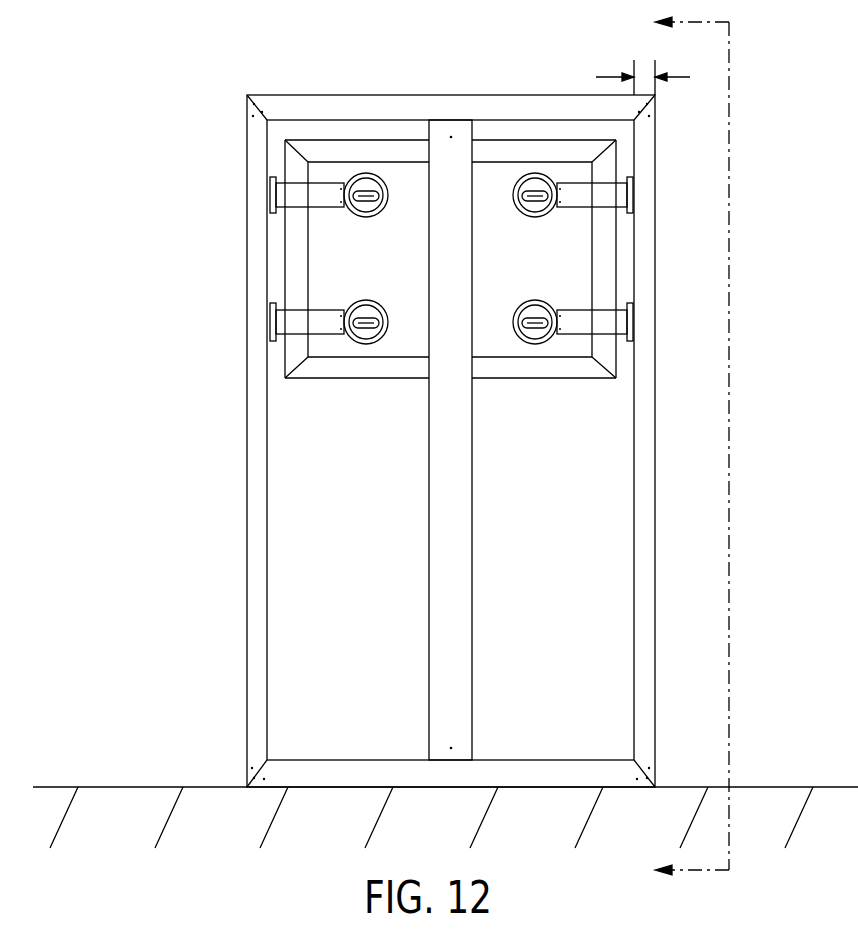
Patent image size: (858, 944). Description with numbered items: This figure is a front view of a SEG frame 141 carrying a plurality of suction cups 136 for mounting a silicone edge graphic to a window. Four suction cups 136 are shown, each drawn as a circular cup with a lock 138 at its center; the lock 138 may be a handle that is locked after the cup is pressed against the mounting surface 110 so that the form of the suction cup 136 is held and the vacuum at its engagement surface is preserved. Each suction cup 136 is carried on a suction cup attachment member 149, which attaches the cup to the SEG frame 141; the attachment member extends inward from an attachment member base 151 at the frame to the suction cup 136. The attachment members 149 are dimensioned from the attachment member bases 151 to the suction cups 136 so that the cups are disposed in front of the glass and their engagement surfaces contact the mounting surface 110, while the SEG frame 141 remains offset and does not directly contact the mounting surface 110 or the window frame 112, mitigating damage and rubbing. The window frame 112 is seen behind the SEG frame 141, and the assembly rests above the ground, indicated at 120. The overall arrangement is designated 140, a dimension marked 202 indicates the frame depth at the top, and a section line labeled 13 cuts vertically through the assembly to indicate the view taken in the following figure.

The section line 13- 13 is at (676, 450).
The mounting surface 110 is at (498, 177).
The window frame 112 is at (388, 152).
The ground surface 120 is at (796, 787).
The suction cup 136 is at (355, 178).
The lock 138 is at (380, 215).
The barrier assembly 140 is at (838, 69).
The SEG frame 141 is at (495, 110).
The suction cup attachment member 149 is at (330, 183).
The attachment member base 151 is at (268, 193).
The frame thickness 202 is at (683, 80).